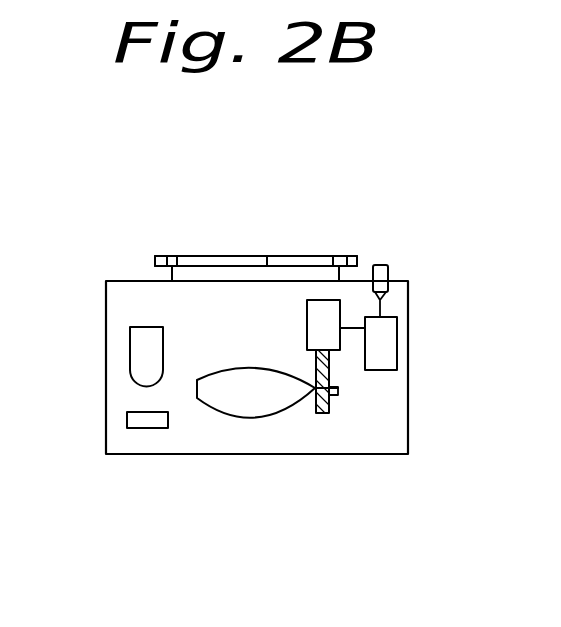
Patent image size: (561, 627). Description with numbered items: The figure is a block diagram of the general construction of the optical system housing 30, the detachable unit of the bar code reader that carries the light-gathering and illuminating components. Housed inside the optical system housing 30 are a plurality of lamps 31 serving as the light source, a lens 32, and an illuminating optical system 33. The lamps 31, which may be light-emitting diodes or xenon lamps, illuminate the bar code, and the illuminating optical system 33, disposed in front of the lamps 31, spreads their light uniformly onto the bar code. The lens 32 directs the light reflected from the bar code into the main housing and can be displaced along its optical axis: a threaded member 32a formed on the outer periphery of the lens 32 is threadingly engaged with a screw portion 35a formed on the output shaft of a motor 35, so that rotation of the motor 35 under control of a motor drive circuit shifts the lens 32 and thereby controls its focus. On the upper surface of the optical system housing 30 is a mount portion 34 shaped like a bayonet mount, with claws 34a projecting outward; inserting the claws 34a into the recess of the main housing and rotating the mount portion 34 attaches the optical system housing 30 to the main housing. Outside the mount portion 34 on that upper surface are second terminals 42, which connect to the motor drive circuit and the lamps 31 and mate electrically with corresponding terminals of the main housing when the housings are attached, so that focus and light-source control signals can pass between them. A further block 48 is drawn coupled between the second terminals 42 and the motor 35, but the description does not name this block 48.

The optical system housing 30 is at (267, 463).
The lamps 31 is at (137, 347).
The lens 32 is at (235, 403).
The threaded member 32a is at (340, 392).
The illuminating optical system 33 is at (127, 419).
The mount portion 34 is at (302, 256).
The claws 34a is at (213, 256).
The motor 35 is at (300, 325).
The screw portion 35a is at (331, 372).
The second terminals 42 is at (388, 268).
The control unit 48 is at (390, 342).